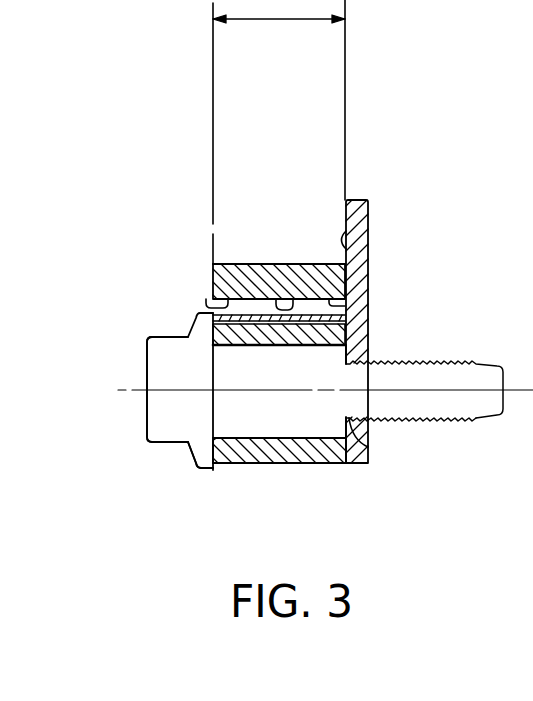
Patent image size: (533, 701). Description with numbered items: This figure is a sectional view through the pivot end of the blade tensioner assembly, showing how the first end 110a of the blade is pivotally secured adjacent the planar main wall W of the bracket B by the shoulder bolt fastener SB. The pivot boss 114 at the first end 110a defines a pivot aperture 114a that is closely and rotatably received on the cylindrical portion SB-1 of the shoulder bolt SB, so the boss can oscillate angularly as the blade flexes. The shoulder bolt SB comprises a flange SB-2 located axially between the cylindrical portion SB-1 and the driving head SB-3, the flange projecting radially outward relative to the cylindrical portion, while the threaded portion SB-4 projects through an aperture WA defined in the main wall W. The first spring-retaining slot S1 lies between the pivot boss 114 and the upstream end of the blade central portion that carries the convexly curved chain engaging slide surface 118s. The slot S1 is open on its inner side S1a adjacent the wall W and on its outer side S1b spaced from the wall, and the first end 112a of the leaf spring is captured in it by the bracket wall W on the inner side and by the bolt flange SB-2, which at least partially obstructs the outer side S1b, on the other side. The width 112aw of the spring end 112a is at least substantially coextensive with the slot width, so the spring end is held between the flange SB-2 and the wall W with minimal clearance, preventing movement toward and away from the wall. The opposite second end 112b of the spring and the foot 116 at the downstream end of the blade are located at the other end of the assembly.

The width of the spring end 112aw is at (213, 19).
The second end of the spring 112b is at (532, 31).
The foot 116 is at (508, 83).
The first end of the blade 110a is at (231, 266).
The chain engaging slide surface 118s is at (276, 264).
The first end of the spring 112a is at (286, 302).
The first spring-retaining slot S1 is at (298, 316).
The inner side of the first slot S1a is at (350, 301).
The outer side of the first slot S1b is at (205, 302).
The bracket B is at (359, 199).
The main wall W is at (356, 252).
The aperture WA is at (362, 450).
The shoulder bolt fastener SB is at (147, 362).
The cylindrical portion SB-1 is at (328, 420).
The flange SB-2 is at (203, 472).
The driving head SB-3 is at (158, 445).
The threaded portion SB-4 is at (415, 378).
The pivot boss 114 is at (299, 460).
The pivot aperture 114a is at (262, 463).